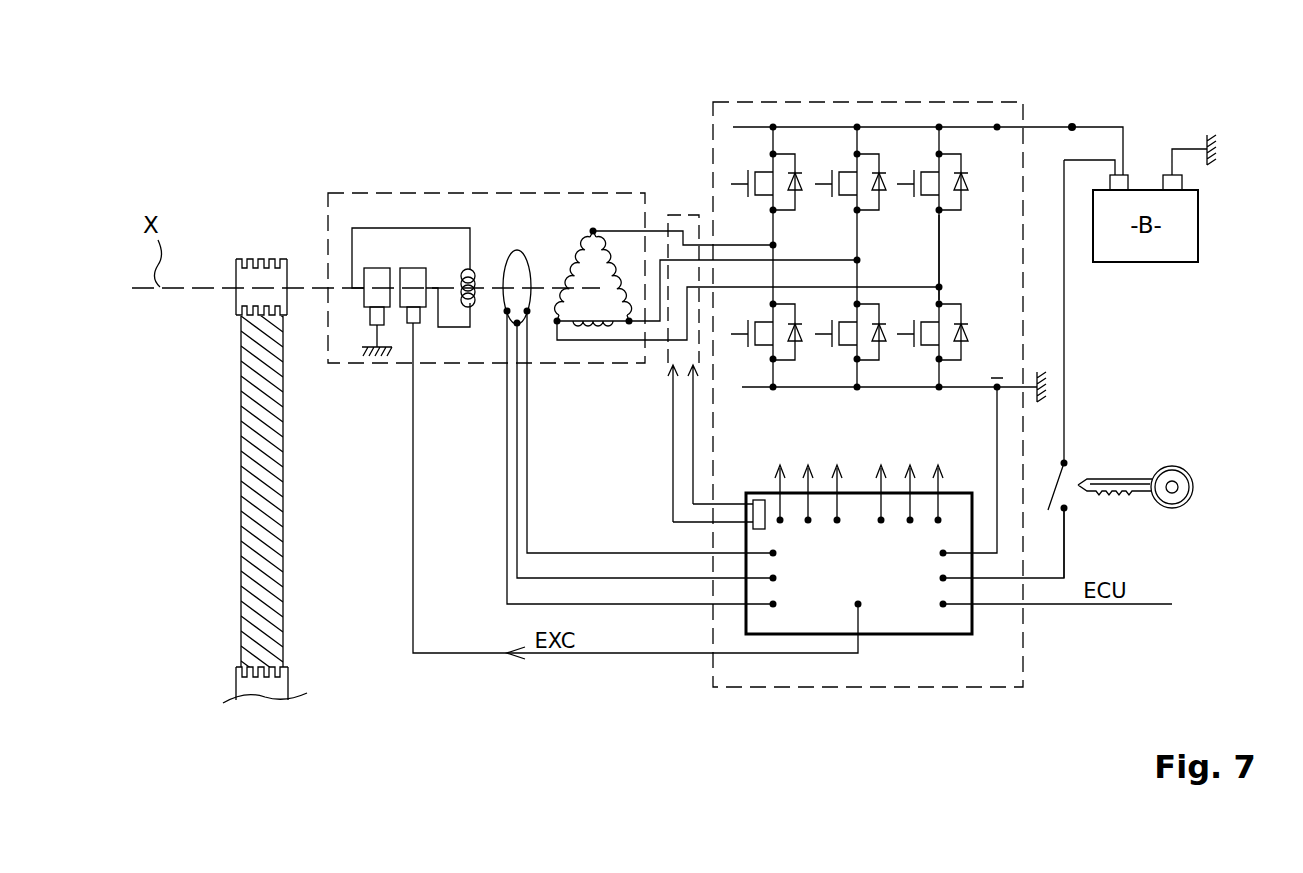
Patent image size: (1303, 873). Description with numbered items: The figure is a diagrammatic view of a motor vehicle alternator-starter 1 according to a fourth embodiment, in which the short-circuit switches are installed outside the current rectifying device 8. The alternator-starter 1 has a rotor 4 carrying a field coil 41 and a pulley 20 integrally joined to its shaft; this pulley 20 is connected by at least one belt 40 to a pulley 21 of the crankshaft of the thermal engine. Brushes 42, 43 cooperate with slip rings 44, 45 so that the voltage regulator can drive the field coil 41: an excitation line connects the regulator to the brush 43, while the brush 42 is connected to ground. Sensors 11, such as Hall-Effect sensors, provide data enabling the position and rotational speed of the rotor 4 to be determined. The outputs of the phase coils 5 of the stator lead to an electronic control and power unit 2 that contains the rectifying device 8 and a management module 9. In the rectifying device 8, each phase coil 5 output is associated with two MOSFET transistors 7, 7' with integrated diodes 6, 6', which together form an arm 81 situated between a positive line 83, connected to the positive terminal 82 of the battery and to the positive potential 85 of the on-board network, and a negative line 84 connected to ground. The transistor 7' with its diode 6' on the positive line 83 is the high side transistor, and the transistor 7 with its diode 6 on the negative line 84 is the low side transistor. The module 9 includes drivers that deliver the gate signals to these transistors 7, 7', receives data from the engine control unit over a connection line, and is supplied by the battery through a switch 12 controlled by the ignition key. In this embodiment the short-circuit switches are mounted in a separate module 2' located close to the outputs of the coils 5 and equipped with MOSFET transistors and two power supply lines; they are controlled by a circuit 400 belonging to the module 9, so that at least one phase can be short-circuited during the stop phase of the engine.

The alternator-starter 1 is at (490, 188).
The electronic control and power unit 2 is at (868, 358).
The module 2' is at (679, 339).
The rotor 4 is at (398, 208).
The phase coil 5 is at (558, 269).
The diode 6 is at (969, 313).
The diode 6' is at (971, 206).
The transistor 7 is at (843, 363).
The transistor 7' is at (825, 191).
The rectifying device 8 is at (790, 110).
The management module 9 is at (959, 510).
The sensors 11 is at (492, 340).
The switch 12 is at (1069, 498).
The pulley 20 is at (255, 259).
The pulley 21 is at (255, 685).
The belt 40 is at (268, 472).
The field coil 41 is at (472, 286).
The brush 42 is at (375, 320).
The brush 43 is at (413, 315).
The slip ring 44 is at (381, 277).
The slip ring 45 is at (413, 277).
The arm 81 is at (941, 247).
The positive terminal 82 is at (1125, 186).
The positive line 83 is at (830, 127).
The negative line 84 is at (955, 388).
The positive potential 85 is at (1072, 122).
The circuit 400 is at (760, 498).